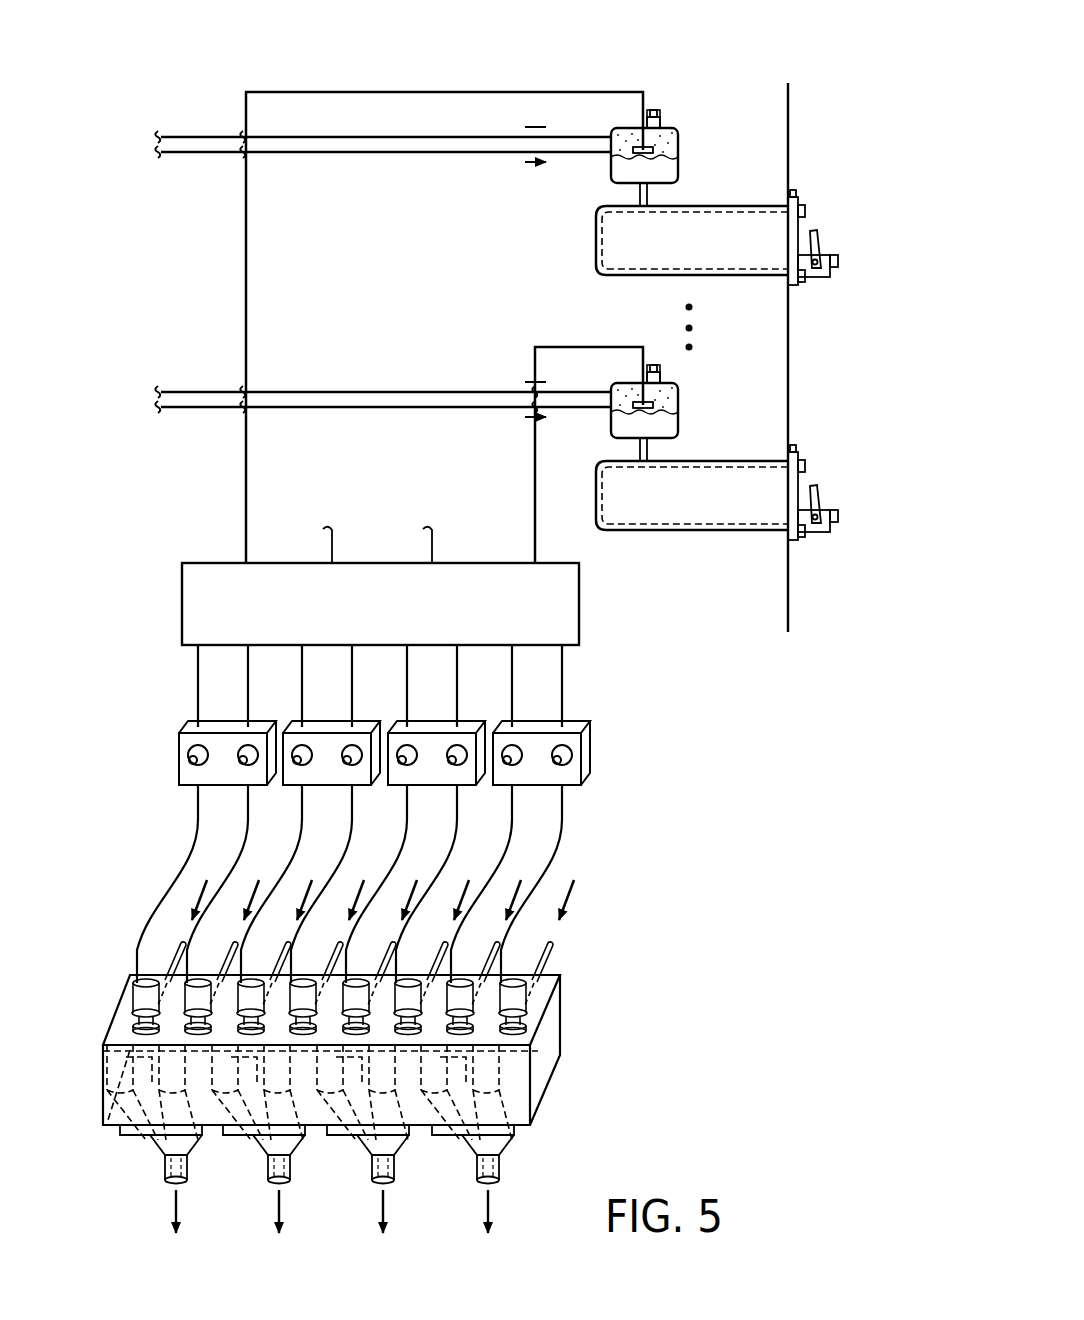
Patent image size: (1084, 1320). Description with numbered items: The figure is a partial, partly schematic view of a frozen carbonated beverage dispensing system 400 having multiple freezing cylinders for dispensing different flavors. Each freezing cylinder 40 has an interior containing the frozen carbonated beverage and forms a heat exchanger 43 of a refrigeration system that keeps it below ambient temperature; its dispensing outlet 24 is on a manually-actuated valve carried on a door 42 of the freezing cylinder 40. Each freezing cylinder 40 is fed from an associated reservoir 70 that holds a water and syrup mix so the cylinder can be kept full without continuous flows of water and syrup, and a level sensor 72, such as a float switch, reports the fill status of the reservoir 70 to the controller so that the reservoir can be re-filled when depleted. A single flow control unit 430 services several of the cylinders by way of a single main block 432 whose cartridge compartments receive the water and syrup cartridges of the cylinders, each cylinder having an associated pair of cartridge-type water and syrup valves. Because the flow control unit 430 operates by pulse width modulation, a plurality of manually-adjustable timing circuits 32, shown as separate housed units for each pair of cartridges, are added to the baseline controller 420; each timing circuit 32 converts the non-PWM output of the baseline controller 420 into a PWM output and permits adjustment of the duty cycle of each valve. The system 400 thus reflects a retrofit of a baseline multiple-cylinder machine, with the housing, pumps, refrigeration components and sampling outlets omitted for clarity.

The system 400 is at (788, 37).
The reservoir 70 is at (694, 169).
The level sensor 72 is at (653, 149).
The freezing cylinder 40 is at (658, 284).
The heat exchanger 43 is at (601, 276).
The door 42 is at (797, 226).
The dispensing outlet 24 is at (838, 290).
The baseline controller 420 is at (398, 614).
The timing circuit 32 is at (592, 751).
The flow control unit 430 is at (393, 1056).
The main block 432 is at (550, 1030).